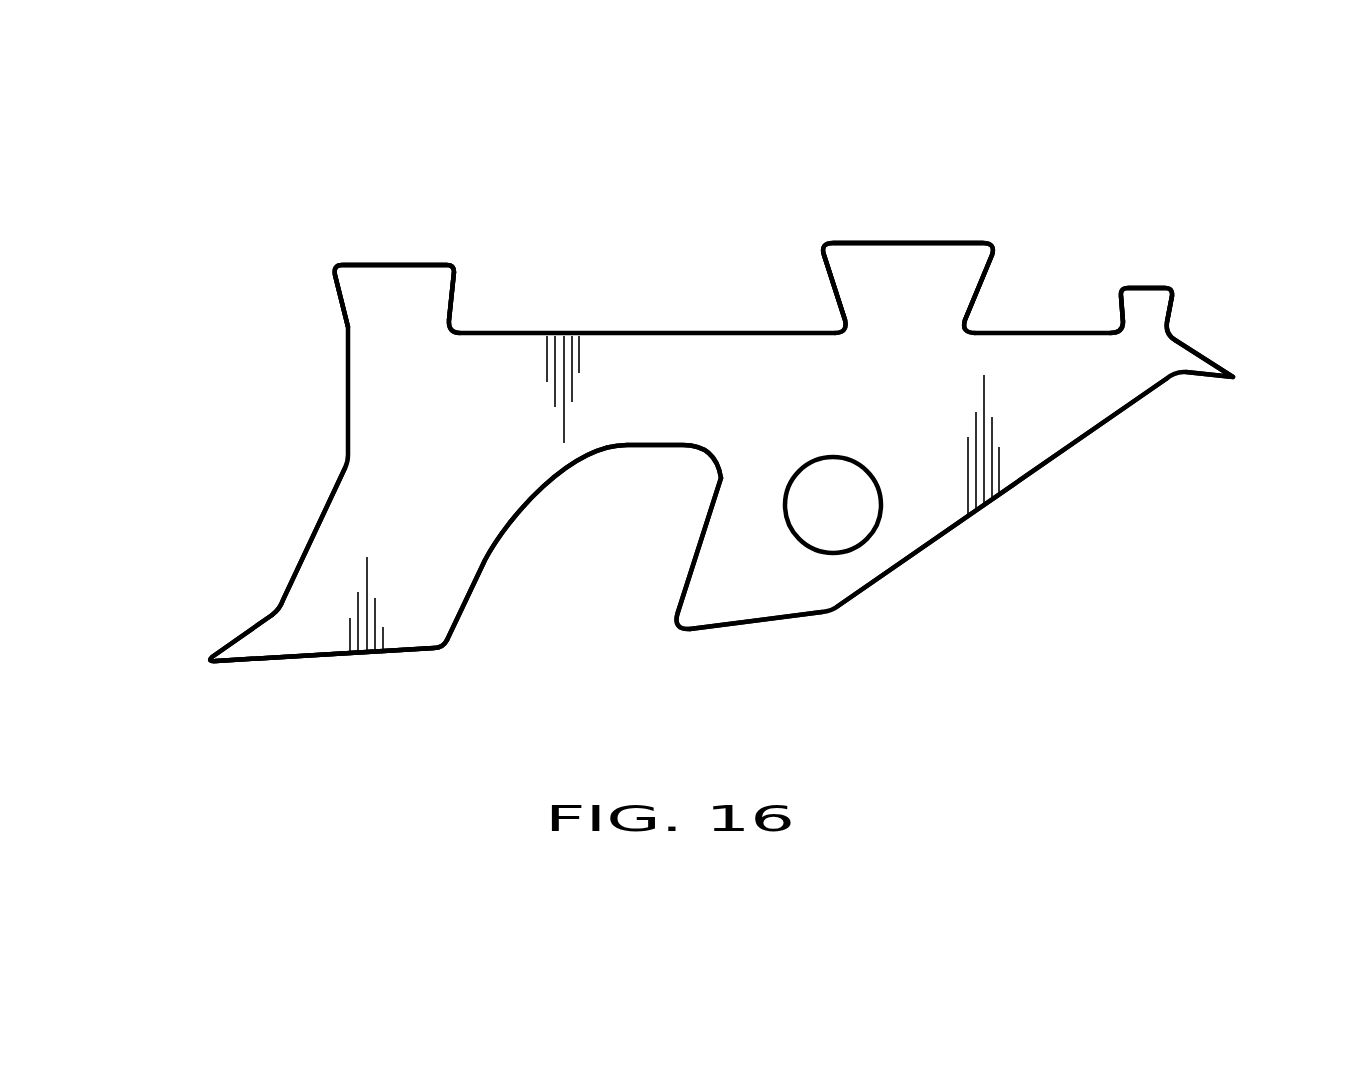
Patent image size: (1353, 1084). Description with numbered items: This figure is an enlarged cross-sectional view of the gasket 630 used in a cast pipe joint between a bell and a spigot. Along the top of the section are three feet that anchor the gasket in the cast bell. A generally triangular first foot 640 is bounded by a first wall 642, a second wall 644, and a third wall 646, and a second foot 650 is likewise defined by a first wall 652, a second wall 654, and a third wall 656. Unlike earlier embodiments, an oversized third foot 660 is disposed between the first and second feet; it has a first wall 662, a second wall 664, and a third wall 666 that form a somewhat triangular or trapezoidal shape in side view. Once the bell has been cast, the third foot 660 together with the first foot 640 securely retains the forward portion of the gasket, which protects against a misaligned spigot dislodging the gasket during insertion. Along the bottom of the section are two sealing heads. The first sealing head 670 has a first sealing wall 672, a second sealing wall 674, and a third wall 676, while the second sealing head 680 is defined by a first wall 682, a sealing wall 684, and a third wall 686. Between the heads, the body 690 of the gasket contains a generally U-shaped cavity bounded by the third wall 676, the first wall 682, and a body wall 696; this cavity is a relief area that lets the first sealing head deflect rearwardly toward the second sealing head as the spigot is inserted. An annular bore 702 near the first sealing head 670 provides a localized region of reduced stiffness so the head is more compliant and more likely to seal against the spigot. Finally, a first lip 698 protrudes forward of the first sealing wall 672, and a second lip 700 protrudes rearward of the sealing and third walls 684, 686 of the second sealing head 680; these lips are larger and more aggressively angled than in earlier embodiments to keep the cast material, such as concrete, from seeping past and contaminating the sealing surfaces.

The gasket 630 is at (185, 238).
The first foot 640 is at (1157, 305).
The first wall 642 is at (1167, 315).
The second wall 644 is at (1142, 290).
The third wall 646 is at (1120, 312).
The second foot 650 is at (367, 288).
The first wall 652 is at (337, 300).
The second wall 654 is at (407, 263).
The third wall 656 is at (455, 295).
The third foot 660 is at (927, 267).
The first wall 662 is at (833, 285).
The second wall 664 is at (900, 243).
The third wall 666 is at (992, 266).
The first sealing head 670 is at (803, 593).
The first sealing wall 672 is at (1025, 477).
The second sealing wall 674 is at (712, 630).
The third wall 676 is at (680, 600).
The second sealing head 680 is at (403, 615).
The first wall 682 is at (492, 555).
The sealing wall 684 is at (268, 662).
The third wall 686 is at (303, 545).
The body 690 is at (623, 360).
The body wall 696 is at (645, 447).
The first lip 698 is at (1217, 372).
The second lip 700 is at (220, 658).
The annular bore 702 is at (833, 512).